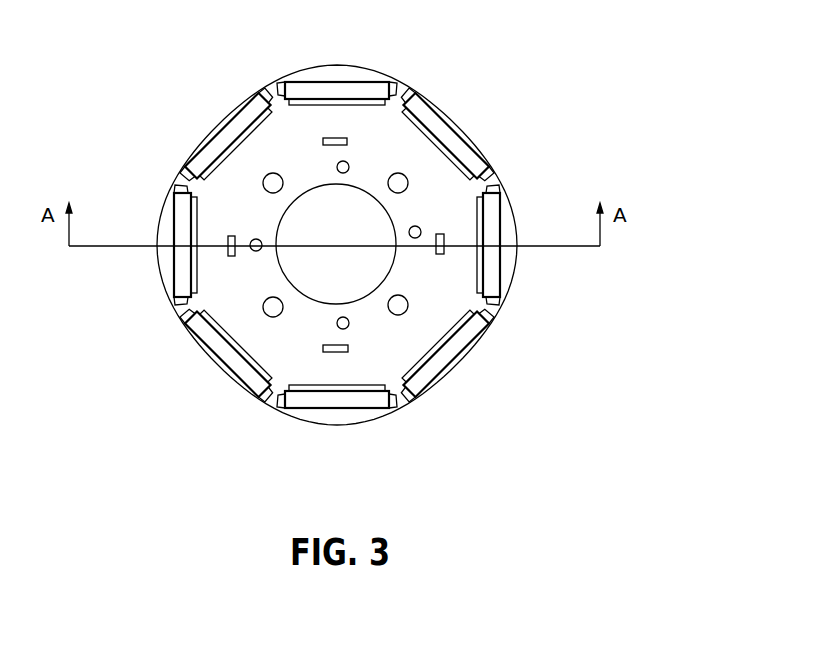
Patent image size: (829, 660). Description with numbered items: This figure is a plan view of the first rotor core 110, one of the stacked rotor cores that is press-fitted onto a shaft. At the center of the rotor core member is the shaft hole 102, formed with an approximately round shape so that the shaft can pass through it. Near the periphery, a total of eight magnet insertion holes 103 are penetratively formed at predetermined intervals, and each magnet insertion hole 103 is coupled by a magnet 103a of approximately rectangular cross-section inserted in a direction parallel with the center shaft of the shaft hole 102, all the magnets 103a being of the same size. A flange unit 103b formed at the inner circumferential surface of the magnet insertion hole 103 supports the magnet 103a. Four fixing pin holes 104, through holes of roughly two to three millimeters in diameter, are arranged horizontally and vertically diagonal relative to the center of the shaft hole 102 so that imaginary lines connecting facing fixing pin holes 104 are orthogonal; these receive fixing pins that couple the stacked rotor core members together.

The first rotor core 110 is at (530, 22).
The shaft hole 102 is at (295, 258).
The magnet insertion hole 103 is at (500, 268).
The magnet 103a is at (490, 208).
The flange unit 103b is at (468, 148).
The fixing pin hole 104 is at (408, 306).